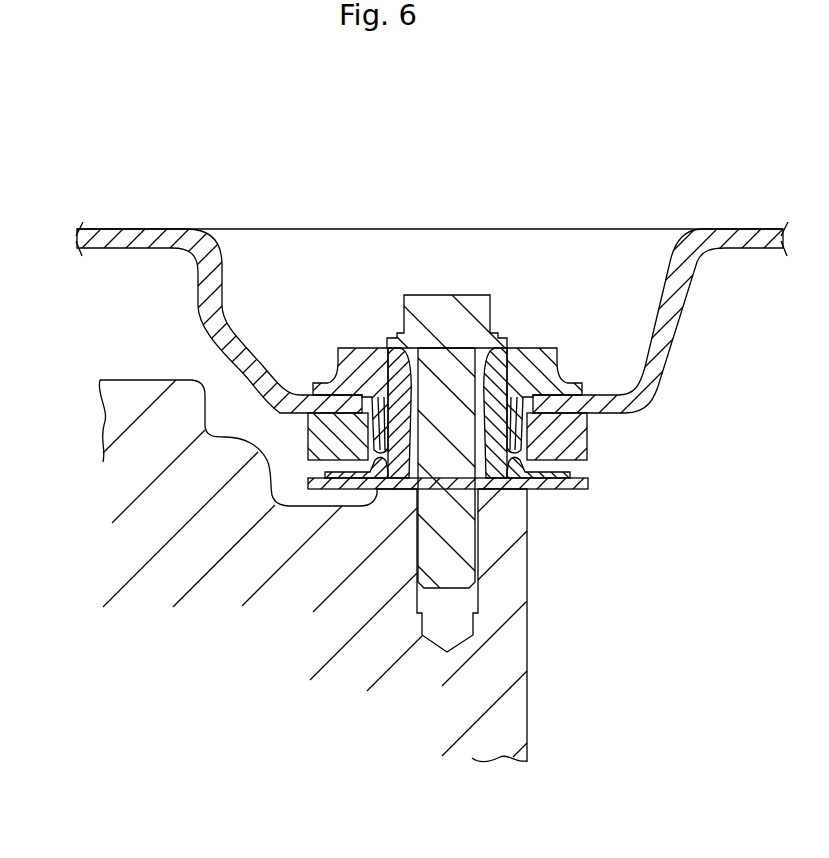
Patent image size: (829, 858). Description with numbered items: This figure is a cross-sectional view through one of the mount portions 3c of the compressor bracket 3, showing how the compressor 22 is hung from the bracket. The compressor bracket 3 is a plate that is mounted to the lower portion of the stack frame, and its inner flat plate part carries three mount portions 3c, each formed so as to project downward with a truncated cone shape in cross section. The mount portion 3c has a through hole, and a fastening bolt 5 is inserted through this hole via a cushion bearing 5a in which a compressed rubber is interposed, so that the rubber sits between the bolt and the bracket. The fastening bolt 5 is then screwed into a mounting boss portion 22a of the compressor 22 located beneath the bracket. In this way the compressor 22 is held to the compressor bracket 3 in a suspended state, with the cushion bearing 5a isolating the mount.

The compressor bracket 3 is at (432, 297).
The mount portion 3c is at (655, 372).
The fastening bolt 5 is at (457, 320).
The cushion bearing 5a is at (617, 476).
The compressor 22 is at (392, 571).
The mounting boss portion 22a is at (508, 537).